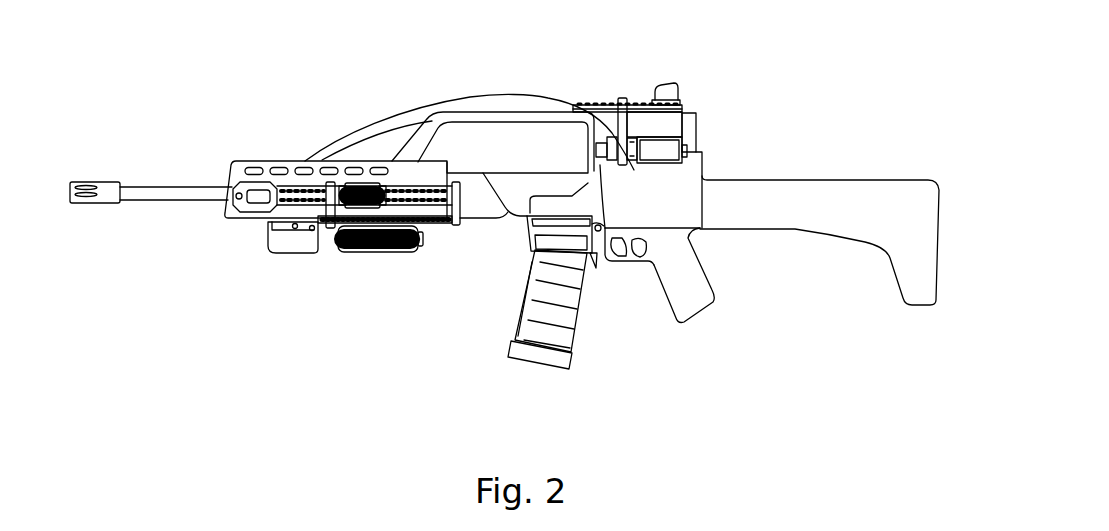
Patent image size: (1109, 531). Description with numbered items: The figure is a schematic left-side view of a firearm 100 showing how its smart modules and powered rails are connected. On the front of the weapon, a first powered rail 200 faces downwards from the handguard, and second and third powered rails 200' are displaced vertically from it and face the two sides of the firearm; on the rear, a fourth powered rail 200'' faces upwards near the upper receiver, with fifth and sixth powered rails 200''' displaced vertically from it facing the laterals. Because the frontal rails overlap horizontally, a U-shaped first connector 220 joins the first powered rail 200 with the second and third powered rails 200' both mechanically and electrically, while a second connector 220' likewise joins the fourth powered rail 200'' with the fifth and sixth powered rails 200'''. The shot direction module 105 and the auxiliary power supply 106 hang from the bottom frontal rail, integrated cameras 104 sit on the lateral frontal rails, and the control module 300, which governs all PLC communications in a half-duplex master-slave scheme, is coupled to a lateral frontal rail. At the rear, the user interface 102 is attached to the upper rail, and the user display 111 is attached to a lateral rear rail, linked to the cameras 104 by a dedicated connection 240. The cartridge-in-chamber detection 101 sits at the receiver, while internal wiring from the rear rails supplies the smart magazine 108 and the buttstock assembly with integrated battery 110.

The firearm 100 is at (740, 272).
The cartridge-in-chamber detection 101 is at (560, 203).
The user interface 102 is at (667, 92).
The integrated cameras 104 is at (265, 195).
The shot direction module 105 is at (290, 237).
The auxiliary power supply 106 is at (380, 243).
The smart magazine 108 is at (562, 300).
The buttstock assembly with integrated battery 110 is at (875, 200).
The user display 111 is at (662, 148).
The first powered rail 200 is at (439, 261).
The second and third powered rails 200' is at (413, 263).
The fourth powered rail 200'' is at (611, 72).
The fifth and sixth powered rails 200''' is at (684, 276).
The first connector 220 is at (300, 275).
The second connector 220' is at (645, 94).
The dedicated connection 240 is at (420, 107).
The control module 300 is at (350, 185).